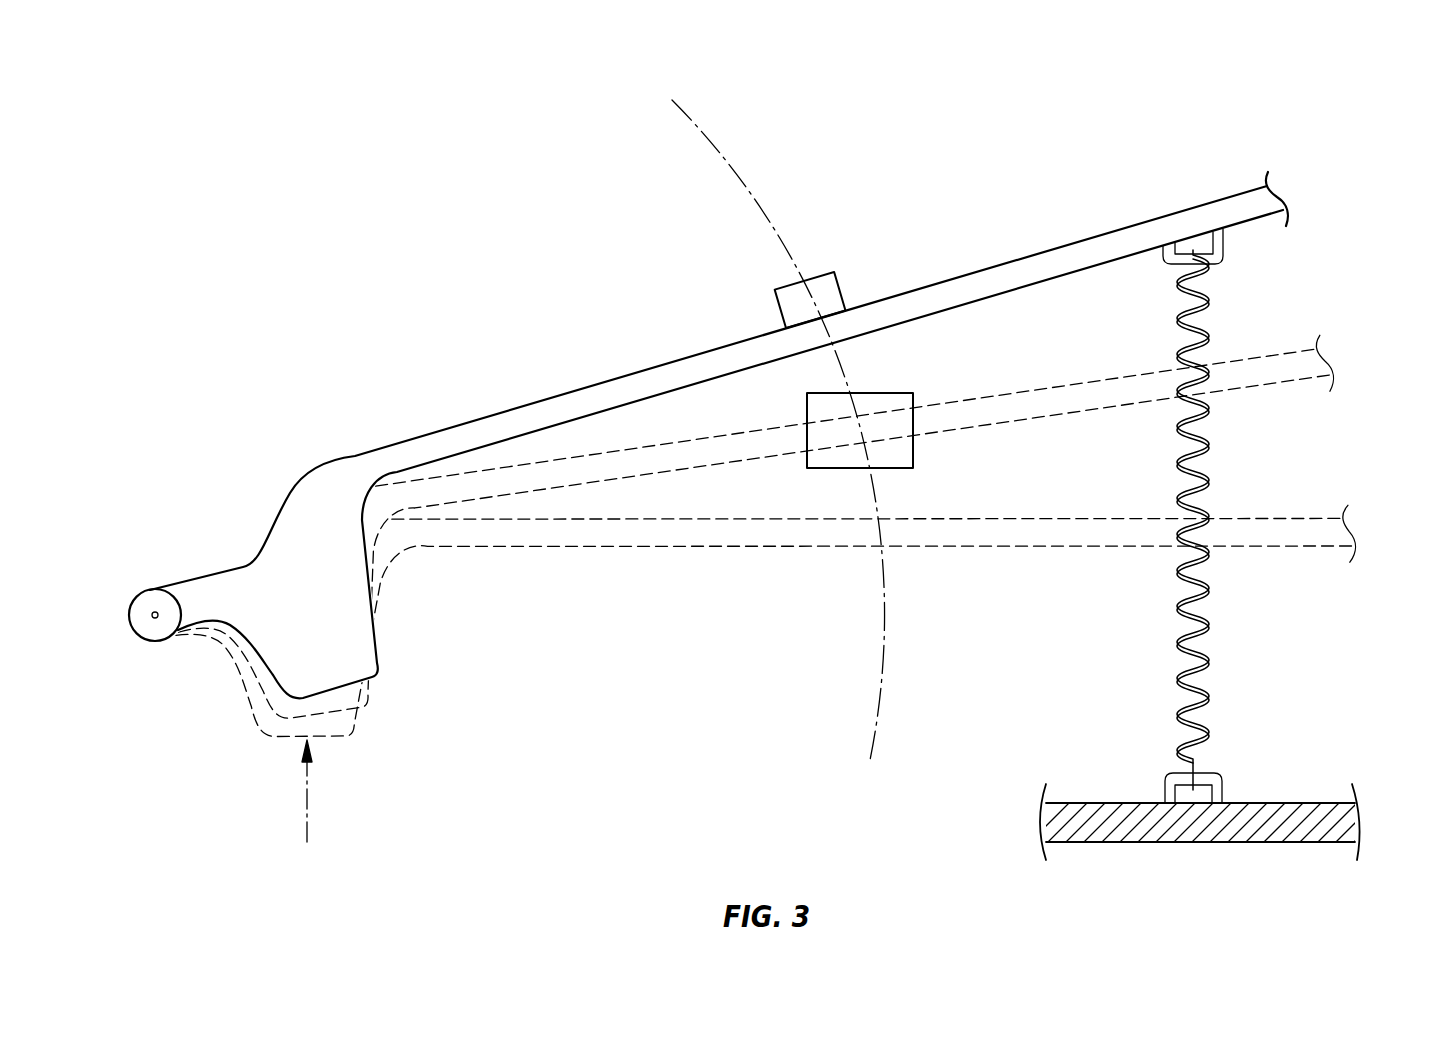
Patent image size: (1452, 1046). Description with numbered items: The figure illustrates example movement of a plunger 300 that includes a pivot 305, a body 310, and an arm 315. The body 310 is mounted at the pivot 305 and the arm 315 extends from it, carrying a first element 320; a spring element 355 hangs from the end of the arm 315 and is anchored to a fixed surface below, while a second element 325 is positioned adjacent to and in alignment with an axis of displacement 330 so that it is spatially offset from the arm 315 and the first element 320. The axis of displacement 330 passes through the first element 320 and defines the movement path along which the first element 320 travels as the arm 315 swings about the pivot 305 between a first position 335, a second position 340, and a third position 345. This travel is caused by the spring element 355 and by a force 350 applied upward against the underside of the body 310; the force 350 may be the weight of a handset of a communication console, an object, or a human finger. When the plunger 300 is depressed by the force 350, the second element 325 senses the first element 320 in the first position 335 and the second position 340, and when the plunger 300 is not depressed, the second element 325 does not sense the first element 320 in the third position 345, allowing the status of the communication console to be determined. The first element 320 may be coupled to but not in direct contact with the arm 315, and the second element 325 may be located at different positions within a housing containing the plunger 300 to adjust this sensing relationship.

The plunger 300 is at (163, 130).
The pivot 305 is at (149, 590).
The body 310 is at (379, 659).
The arm 315 is at (1202, 201).
The first element 320 is at (848, 283).
The second element 325 is at (913, 455).
The axis of displacement 330 is at (744, 183).
The first position 335 is at (1327, 190).
The second position 340 is at (1360, 360).
The third position 345 is at (1358, 535).
The force 350 is at (308, 805).
The spring element 355 is at (1211, 660).